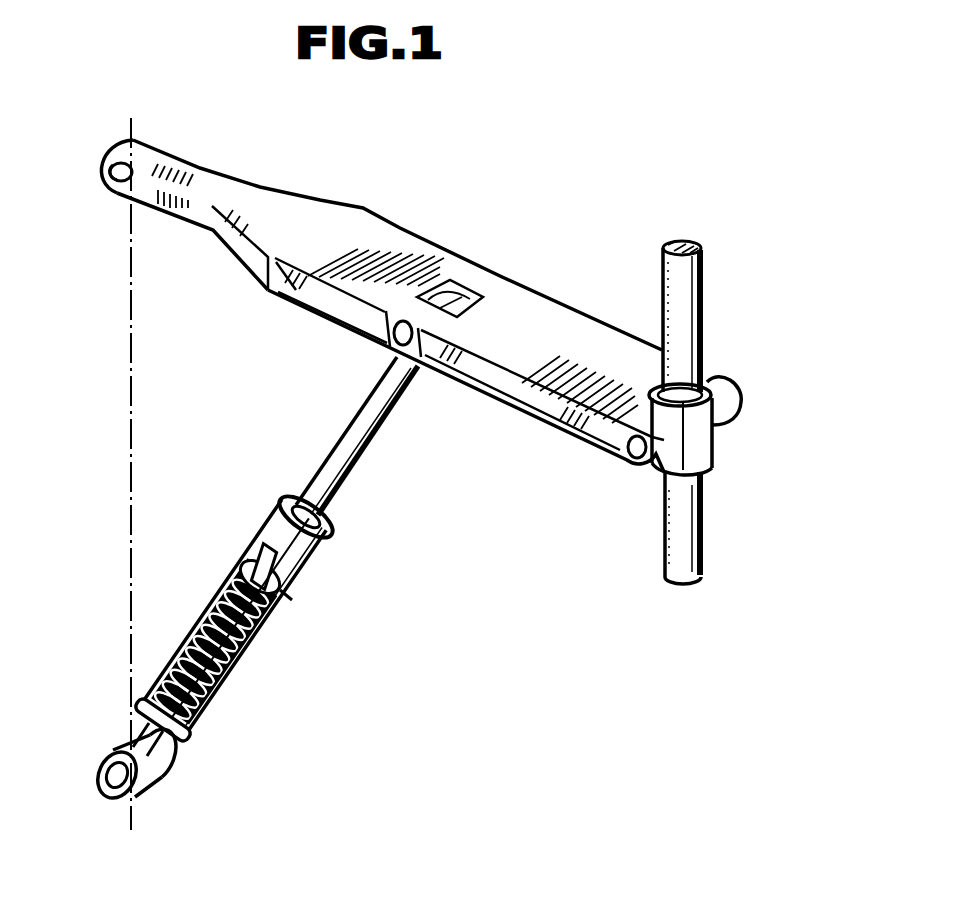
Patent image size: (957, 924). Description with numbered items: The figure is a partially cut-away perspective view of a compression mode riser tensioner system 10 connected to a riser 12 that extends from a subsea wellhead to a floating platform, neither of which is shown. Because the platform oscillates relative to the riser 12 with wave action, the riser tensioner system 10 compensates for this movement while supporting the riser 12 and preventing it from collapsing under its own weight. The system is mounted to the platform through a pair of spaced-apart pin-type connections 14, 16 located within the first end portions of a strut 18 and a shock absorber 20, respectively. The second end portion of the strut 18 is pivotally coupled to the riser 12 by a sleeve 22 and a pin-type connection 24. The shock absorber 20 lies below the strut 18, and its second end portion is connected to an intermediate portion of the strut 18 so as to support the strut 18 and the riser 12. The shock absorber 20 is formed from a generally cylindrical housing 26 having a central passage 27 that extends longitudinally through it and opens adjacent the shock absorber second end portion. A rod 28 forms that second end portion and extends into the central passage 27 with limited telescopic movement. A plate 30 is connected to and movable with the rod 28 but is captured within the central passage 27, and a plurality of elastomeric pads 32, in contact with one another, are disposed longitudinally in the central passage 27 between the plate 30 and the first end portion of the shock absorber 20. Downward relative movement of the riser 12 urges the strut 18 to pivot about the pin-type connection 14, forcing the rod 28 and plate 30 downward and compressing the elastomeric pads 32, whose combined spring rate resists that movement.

The riser tensioner system 10 is at (636, 200).
The riser 12 is at (703, 307).
The pin-type connection 14 is at (115, 128).
The pin-type connection 16 is at (106, 806).
The strut 18 is at (368, 212).
The shock absorber 20 is at (250, 645).
The sleeve 22 is at (712, 472).
The pin-type connection 24 is at (743, 385).
The housing 26 is at (334, 548).
The central passage 27 is at (287, 594).
The rod 28 is at (337, 450).
The plate 30 is at (241, 552).
The elastomeric pads 32 is at (194, 606).